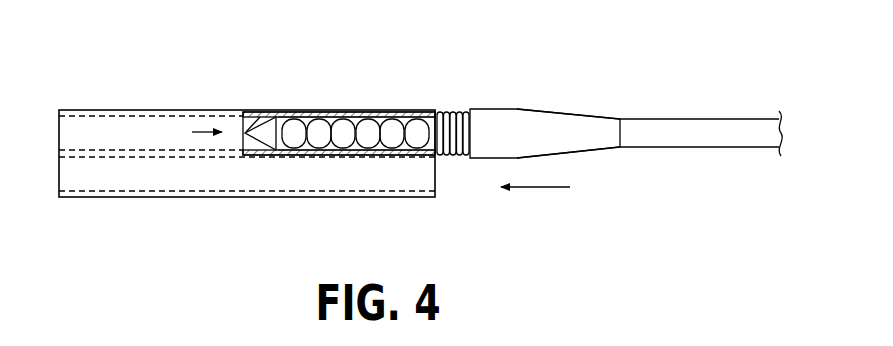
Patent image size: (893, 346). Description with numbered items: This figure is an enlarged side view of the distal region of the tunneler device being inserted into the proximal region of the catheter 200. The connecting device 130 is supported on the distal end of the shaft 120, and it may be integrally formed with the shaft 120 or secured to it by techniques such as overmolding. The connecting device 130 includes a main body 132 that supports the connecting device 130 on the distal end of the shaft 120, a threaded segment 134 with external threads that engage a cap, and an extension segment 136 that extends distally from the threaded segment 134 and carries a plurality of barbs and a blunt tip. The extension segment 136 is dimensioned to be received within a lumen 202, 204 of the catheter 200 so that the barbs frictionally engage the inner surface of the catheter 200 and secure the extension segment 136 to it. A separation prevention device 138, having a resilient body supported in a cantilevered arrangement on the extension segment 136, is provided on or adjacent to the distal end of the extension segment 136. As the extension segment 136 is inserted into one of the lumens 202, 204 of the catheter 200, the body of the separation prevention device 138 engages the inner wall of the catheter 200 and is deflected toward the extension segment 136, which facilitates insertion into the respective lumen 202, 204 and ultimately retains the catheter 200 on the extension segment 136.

The shaft 120 is at (728, 119).
The connecting device 130 is at (545, 103).
The main body 132 is at (595, 113).
The threaded segment 134 is at (453, 108).
The extension segment 136 is at (370, 110).
The separation prevention device 138 is at (260, 117).
The catheter 200 is at (213, 104).
The lumen 202 is at (122, 131).
The lumen 204 is at (122, 177).